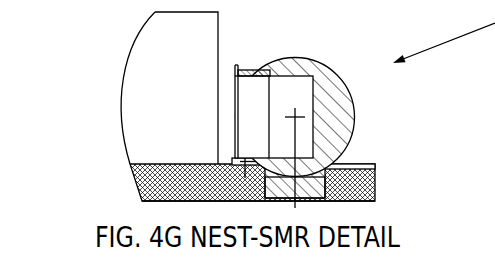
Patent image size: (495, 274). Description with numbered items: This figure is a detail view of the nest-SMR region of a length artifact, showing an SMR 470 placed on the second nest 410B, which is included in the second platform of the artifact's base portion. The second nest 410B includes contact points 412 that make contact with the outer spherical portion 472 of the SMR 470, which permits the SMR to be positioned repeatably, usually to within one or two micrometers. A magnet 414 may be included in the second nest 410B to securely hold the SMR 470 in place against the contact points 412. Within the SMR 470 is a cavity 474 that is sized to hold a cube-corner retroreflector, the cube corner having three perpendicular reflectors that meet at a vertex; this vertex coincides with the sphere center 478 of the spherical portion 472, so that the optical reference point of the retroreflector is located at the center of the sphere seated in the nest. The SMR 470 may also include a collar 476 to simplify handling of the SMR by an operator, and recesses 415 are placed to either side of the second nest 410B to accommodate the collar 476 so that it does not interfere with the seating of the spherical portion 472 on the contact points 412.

The second nest 410B is at (202, 138).
The contact points 412 is at (373, 178).
The magnet 414 is at (373, 200).
The recesses 415 is at (340, 162).
The SMR 470 is at (324, 37).
The outer spherical portion 472 is at (354, 117).
The cavity 474 is at (312, 81).
The collar 476 is at (243, 69).
The sphere center 478 is at (291, 115).